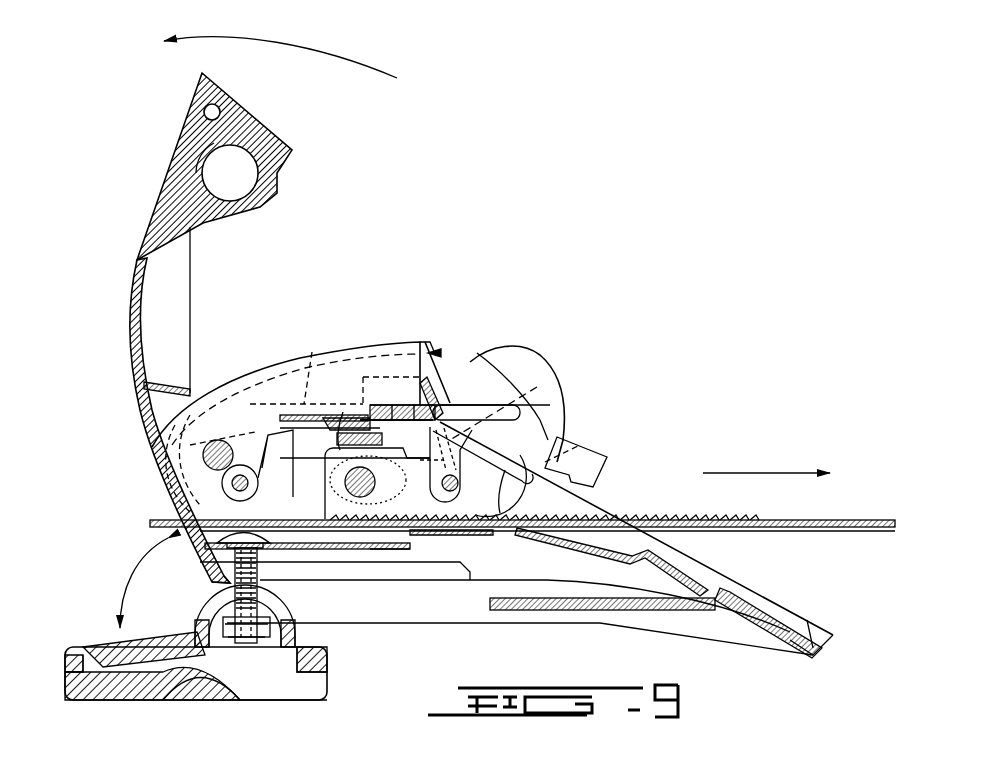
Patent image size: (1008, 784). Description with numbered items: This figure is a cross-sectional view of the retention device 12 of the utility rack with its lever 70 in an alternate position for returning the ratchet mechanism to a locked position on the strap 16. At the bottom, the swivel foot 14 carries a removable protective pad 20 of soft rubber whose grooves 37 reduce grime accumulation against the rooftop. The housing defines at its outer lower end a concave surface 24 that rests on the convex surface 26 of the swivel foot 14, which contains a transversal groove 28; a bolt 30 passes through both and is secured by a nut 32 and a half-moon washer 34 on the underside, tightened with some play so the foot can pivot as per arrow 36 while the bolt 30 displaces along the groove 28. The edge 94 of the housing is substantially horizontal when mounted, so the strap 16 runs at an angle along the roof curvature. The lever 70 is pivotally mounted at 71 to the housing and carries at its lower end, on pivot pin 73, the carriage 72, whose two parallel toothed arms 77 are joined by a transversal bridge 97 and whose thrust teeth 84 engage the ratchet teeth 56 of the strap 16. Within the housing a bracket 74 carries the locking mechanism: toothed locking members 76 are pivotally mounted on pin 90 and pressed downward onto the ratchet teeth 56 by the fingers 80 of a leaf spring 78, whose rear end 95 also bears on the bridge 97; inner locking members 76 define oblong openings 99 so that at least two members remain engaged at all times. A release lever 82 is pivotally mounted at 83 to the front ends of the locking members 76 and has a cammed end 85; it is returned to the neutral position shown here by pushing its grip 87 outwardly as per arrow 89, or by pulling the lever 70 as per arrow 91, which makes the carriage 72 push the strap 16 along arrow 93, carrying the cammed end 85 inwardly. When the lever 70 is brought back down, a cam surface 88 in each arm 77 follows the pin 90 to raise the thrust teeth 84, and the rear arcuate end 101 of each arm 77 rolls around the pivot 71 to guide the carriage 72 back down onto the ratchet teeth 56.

The retention device 12 is at (380, 244).
The swivel foot 14 is at (122, 641).
The strap 16 is at (150, 523).
The protective pad 20 is at (78, 697).
The concave surface 24 is at (230, 582).
The convex surface 26 is at (287, 607).
The transversal groove 28 is at (213, 612).
The bolt 30 is at (283, 563).
The nut 32 is at (280, 630).
The half-moon washer 34 is at (227, 617).
The arrow 36 is at (128, 583).
The grooves 37 is at (167, 687).
The ratchet teeth 56 is at (175, 518).
The lever 70 is at (190, 258).
The pivot 71 is at (205, 445).
The carriage 72 is at (255, 468).
The pivot pin 73 is at (197, 503).
The bracket 74 is at (314, 350).
The toothed locking members 76 is at (413, 530).
The toothed arms 77 is at (285, 445).
The leaf spring 78 is at (396, 405).
The fingers 80 is at (537, 387).
The release lever 82 is at (465, 450).
The pivot 83 is at (505, 470).
The thrust teeth 84 is at (402, 527).
The cammed end 85 is at (520, 514).
The grip 87 is at (440, 403).
The cam surface 88 is at (476, 543).
The arrow 89 is at (477, 353).
The pin 90 is at (302, 428).
The arrow 91 is at (360, 60).
The arrow 93 is at (737, 473).
The edge 94 is at (743, 577).
The rear end 95 is at (343, 412).
The bridge 97 is at (421, 343).
The oblong openings 99 is at (560, 450).
The rear arcuate end 101 is at (168, 538).